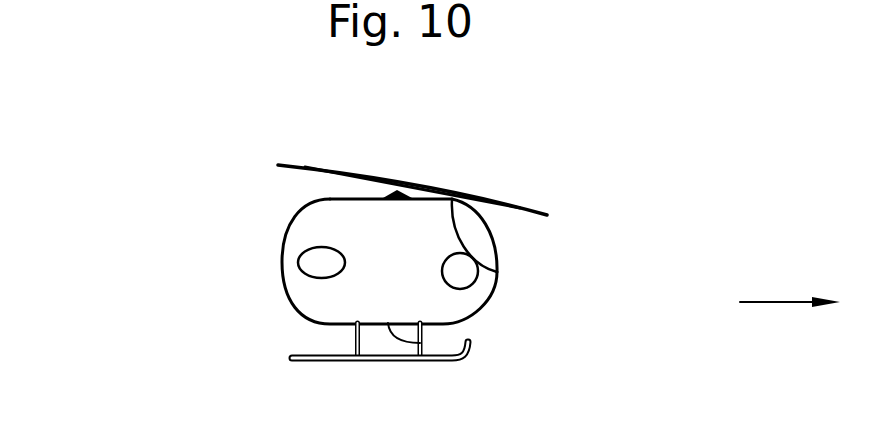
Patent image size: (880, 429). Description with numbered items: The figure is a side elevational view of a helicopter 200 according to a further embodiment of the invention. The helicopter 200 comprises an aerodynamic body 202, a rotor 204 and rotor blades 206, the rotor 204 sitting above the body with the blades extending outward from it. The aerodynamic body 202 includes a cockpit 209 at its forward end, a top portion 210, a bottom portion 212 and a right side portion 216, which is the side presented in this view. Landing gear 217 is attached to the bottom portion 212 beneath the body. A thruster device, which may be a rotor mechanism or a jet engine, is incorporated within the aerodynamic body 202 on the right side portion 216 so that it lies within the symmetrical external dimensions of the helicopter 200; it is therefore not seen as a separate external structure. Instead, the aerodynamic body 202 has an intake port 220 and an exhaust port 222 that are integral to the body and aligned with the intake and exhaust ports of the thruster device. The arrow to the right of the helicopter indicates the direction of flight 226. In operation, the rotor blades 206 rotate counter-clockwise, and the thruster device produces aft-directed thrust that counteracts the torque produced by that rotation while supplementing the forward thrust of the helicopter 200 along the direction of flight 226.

The helicopter 200 is at (111, 137).
The aerodynamic body 202 is at (297, 290).
The rotor 204 is at (390, 188).
The rotor blades 206 is at (488, 197).
The cockpit 209 is at (483, 245).
The top portion 210 is at (298, 217).
The bottom portion 212 is at (420, 342).
The right side portion 216 is at (383, 273).
The landing gear 217 is at (357, 342).
The intake port 220 is at (480, 273).
The exhaust port 222 is at (300, 265).
The direction of flight 226 is at (775, 303).